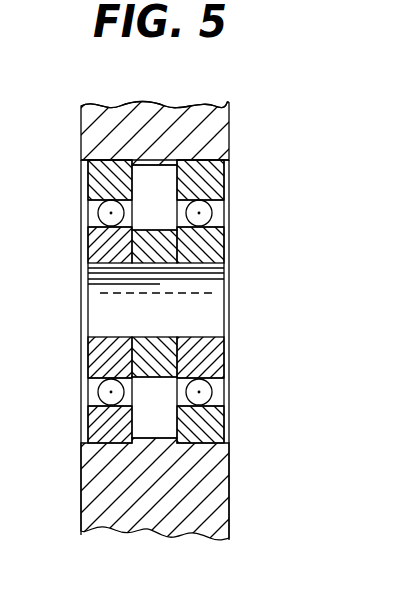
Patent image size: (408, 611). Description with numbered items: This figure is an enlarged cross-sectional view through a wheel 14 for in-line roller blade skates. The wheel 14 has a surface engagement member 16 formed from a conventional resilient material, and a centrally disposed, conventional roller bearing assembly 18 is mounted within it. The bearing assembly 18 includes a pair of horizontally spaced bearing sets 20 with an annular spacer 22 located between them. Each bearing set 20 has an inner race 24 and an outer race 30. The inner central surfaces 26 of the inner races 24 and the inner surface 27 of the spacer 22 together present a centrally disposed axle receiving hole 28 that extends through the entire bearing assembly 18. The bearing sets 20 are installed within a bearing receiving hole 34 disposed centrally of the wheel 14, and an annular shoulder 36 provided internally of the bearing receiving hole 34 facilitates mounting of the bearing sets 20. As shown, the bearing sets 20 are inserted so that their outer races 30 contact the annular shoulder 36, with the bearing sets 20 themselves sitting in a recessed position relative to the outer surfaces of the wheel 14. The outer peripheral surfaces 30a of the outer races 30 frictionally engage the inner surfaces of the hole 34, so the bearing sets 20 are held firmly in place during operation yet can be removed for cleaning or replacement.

The wheel 14 is at (94, 94).
The surface engagement member 16 is at (229, 108).
The roller bearing assembly 18 is at (167, 324).
The bearing sets 20 is at (164, 332).
The annular spacer 22 is at (165, 355).
The inner races 24 is at (105, 362).
The inner central surfaces 26 is at (105, 337).
The inner surface 27 is at (150, 337).
The axle receiving hole 28 is at (205, 268).
The outer races 30 is at (104, 428).
The outer peripheral surfaces 30a is at (105, 449).
The bearing receiving hole 34 is at (229, 162).
The annular shoulder 36 is at (170, 447).